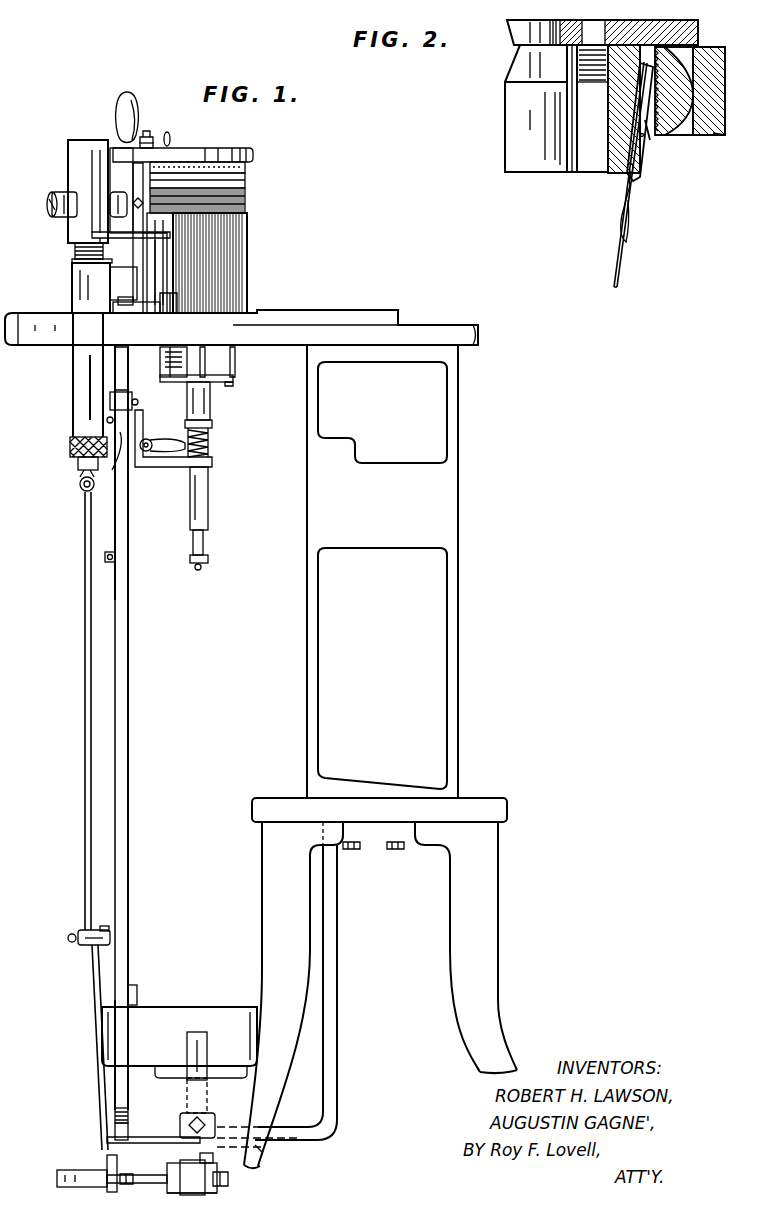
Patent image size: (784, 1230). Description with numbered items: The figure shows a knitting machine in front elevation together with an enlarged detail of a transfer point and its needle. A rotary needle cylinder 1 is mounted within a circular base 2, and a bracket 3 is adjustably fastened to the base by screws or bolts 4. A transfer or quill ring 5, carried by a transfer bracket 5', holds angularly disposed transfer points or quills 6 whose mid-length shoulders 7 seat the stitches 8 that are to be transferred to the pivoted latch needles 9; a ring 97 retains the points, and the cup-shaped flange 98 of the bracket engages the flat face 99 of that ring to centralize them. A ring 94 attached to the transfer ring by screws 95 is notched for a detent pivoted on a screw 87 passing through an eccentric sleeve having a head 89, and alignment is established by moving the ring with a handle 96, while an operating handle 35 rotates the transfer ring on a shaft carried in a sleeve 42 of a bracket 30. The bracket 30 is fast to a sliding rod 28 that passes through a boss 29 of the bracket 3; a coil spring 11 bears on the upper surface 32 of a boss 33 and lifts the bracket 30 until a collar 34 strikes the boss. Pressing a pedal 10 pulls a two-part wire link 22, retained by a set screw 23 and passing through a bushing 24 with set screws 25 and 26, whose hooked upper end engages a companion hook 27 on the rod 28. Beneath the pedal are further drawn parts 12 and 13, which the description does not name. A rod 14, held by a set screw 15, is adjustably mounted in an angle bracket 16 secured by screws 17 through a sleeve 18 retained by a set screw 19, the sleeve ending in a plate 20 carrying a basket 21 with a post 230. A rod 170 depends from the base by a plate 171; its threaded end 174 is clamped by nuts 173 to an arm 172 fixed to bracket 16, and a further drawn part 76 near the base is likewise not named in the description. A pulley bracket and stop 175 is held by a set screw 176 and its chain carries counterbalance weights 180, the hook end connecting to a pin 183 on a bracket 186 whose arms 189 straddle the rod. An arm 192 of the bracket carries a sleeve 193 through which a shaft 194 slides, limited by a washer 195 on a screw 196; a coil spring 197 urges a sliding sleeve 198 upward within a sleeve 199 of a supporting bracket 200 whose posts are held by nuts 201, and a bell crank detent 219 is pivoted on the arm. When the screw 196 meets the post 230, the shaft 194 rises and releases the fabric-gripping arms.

In FIG. 1, the needle cylinder 1 is at (247, 228).
In FIG. 1, the circular base 2 is at (262, 343).
In FIG. 1, the bracket 3 is at (130, 313).
In FIG. 1, the screws or bolts 4 is at (125, 297).
In FIG. 2, the transfer or quill ring 5 is at (572, 119).
In FIG. 1, the transfer ring bracket 5' is at (196, 157).
In FIG. 2, the transfer ring bracket 5' is at (703, 91).
In FIG. 2, the transfer points or quills 6 is at (645, 160).
In FIG. 2, the shoulders 7 is at (630, 185).
In FIG. 2, the stitches 8 is at (628, 198).
In FIG. 2, the needles 9 is at (617, 268).
In FIG. 1, the pedal 10 is at (57, 1172).
In FIG. 1, the coil spring 11 is at (75, 250).
In FIG. 1, the treadle housing 12 is at (180, 1178).
In FIG. 1, the treadle base 13 is at (217, 1193).
In FIG. 1, the rod 14 is at (205, 1163).
In FIG. 1, the set screw 15 is at (228, 1178).
In FIG. 1, the angle bracket 16 is at (337, 1058).
In FIG. 1, the screws 17 is at (352, 849).
In FIG. 1, the sleeve 18 is at (187, 1090).
In FIG. 1, the set screw 19 is at (180, 1125).
In FIG. 1, the plate 20 is at (232, 1078).
In FIG. 1, the basket or stocking retainer 21 is at (193, 1007).
In FIG. 1, the two-part wire link 22 is at (85, 712).
In FIG. 1, the set screw 23 is at (107, 1176).
In FIG. 1, the bushing or link 24 is at (80, 932).
In FIG. 1, the set screw 25 is at (108, 916).
In FIG. 1, the set screw 26 is at (68, 938).
In FIG. 1, the companion hook 27 is at (80, 485).
In FIG. 1, the sliding rod 28 is at (78, 463).
In FIG. 1, the elongated sleeve or boss 29 is at (73, 385).
In FIG. 1, the bracket 30 is at (68, 150).
In FIG. 1, the upper surface of boss 32 is at (72, 261).
In FIG. 1, the boss 33 is at (72, 288).
In FIG. 1, the collar 34 is at (70, 441).
In FIG. 1, the operating handle 35 is at (137, 110).
In FIG. 1, the sleeve 42 is at (58, 193).
In FIG. 1, the block 76 is at (175, 362).
In FIG. 1, the pin or screw 87 is at (150, 134).
In FIG. 1, the head 89 is at (154, 143).
In FIG. 2, the ring 94 is at (700, 33).
In FIG. 2, the screws 95 is at (592, 54).
In FIG. 1, the handle 96 is at (170, 139).
In FIG. 2, the ring 97 is at (673, 140).
In FIG. 2, the cup-shaped flange 98 is at (713, 135).
In FIG. 2, the flat face 99 is at (693, 98).
In FIG. 1, the rod 170 is at (128, 638).
In FIG. 1, the plate or bar 171 is at (128, 355).
In FIG. 1, the arm 172 is at (262, 1152).
In FIG. 1, the nuts 173 is at (128, 1132).
In FIG. 1, the threaded end 174 is at (128, 1112).
In FIG. 1, the combined pulley bracket and stop 175 is at (132, 397).
In FIG. 1, the set screw 176 is at (137, 404).
In FIG. 1, the counterbalance weights 180 is at (137, 990).
In FIG. 1, the short rod or pin 183 is at (108, 452).
In FIG. 1, the bracket 186 is at (128, 530).
In FIG. 1, the arms 189 is at (112, 565).
In FIG. 1, the arm 192 is at (178, 467).
In FIG. 1, the sleeve 193 is at (208, 497).
In FIG. 1, the shaft 194 is at (203, 538).
In FIG. 1, the washer 195 is at (208, 560).
In FIG. 1, the screw 196 is at (200, 570).
In FIG. 1, the coil spring 197 is at (208, 446).
In FIG. 1, the sliding rod or shaft 198 is at (212, 424).
In FIG. 1, the sleeve 199 is at (210, 402).
In FIG. 1, the supporting bracket 200 is at (233, 378).
In FIG. 1, the nuts 201 is at (230, 386).
In FIG. 1, the bell crank lever or detent 219 is at (182, 440).
In FIG. 1, the post 230 is at (207, 1035).